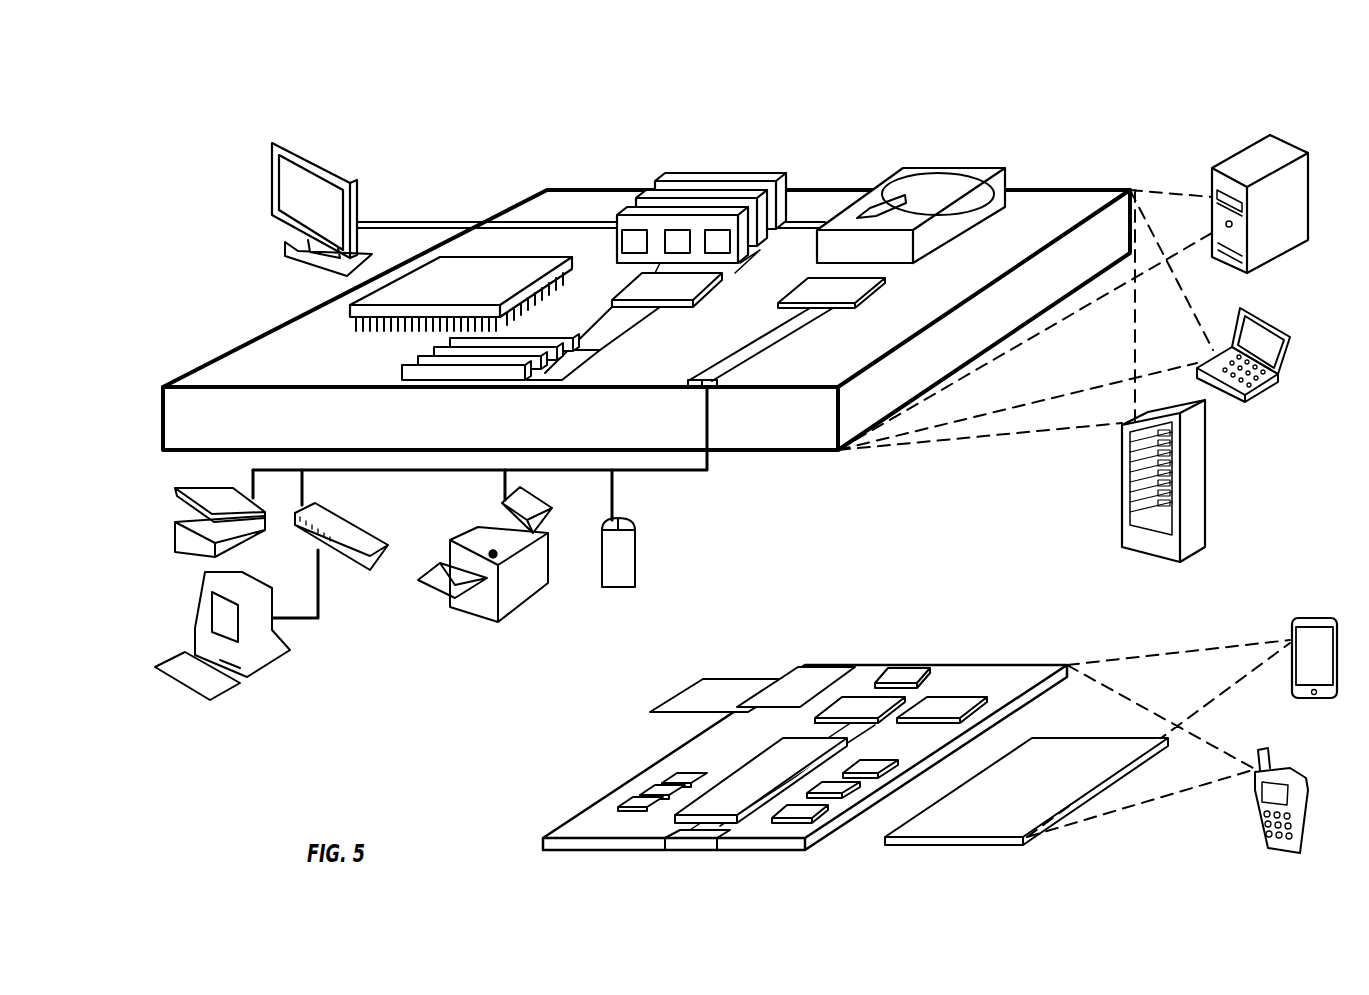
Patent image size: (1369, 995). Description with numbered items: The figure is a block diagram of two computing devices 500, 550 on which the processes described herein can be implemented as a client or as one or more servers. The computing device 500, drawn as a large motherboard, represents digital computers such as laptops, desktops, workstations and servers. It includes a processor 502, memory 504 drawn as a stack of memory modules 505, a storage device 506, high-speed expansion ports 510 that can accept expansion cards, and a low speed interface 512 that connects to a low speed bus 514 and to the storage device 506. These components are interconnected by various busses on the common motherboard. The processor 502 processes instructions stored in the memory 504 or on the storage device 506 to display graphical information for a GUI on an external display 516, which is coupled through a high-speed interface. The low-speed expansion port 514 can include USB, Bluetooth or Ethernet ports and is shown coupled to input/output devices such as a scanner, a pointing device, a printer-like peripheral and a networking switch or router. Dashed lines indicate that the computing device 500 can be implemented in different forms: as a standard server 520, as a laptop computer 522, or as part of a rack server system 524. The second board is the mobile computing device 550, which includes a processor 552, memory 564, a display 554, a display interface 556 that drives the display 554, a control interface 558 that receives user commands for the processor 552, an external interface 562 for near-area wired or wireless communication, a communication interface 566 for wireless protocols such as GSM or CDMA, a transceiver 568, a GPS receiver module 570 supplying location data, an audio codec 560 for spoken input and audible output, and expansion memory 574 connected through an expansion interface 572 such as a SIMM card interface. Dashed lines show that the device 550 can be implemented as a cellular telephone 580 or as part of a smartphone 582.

The computing device 500 is at (521, 167).
The processor 502 is at (350, 312).
The memory 504 is at (685, 182).
The memory modules 505 is at (652, 188).
The storage device 506 is at (917, 172).
The high-speed expansion ports 510 is at (420, 355).
The low speed interface 512 is at (820, 294).
The low speed bus 514 is at (714, 390).
The display 516 is at (303, 152).
The standard server 520 is at (1220, 165).
The laptop computer 522 is at (1258, 398).
The rack server system 524 is at (1118, 523).
The computing device 550 is at (623, 728).
The processor 552 is at (737, 797).
The display 554 is at (997, 813).
The display interface 556 is at (792, 812).
The control interface 558 is at (842, 795).
The audio codec 560 is at (875, 765).
The external interface 562 is at (690, 841).
The memory 564 is at (645, 787).
The communication interface 566 is at (852, 700).
The transceiver 568 is at (948, 703).
The GPS receiver module 570 is at (917, 673).
The expansion interface 572 is at (785, 675).
The expansion memory 574 is at (688, 683).
The cellular telephone 580 is at (1300, 618).
The smartphone 582 is at (1253, 807).